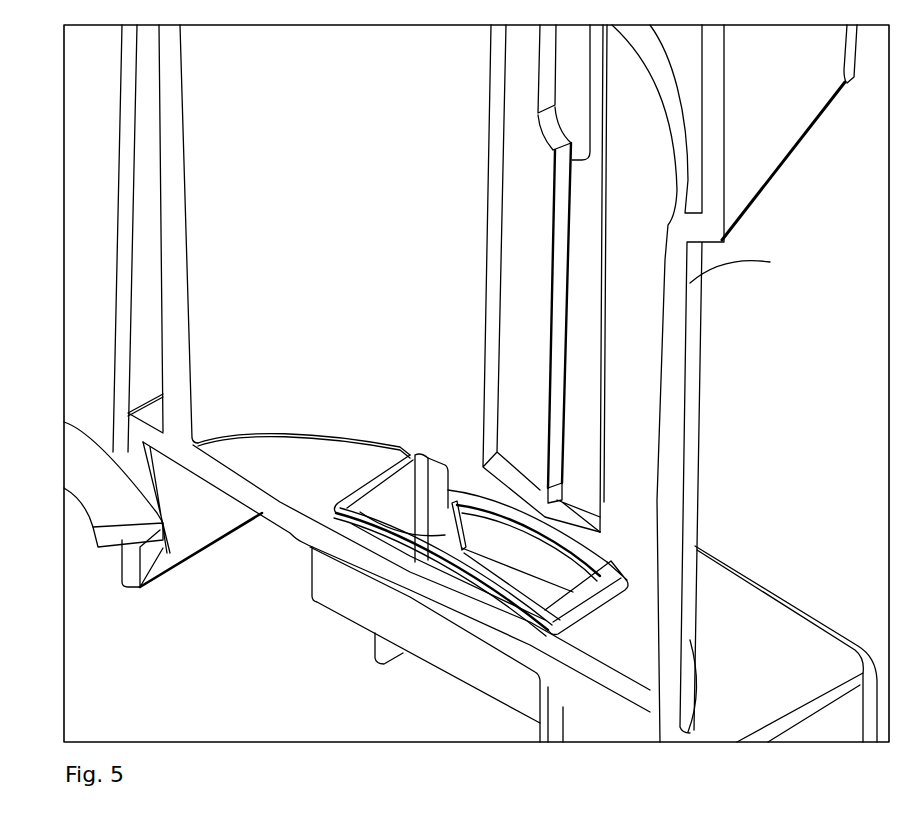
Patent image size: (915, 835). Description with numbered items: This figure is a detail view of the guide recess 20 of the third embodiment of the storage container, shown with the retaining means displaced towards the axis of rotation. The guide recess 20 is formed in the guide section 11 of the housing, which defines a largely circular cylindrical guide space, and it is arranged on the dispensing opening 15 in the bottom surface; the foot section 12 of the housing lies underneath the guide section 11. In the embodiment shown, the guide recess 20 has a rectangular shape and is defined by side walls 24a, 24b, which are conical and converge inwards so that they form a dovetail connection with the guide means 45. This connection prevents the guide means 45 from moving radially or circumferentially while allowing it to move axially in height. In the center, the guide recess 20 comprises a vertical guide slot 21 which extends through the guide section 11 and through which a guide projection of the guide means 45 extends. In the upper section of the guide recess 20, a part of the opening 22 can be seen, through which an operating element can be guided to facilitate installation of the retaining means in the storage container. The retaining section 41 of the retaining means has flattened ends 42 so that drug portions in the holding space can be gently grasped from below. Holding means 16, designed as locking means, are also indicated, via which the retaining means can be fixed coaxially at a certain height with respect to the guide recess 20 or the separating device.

The guide section 11 is at (678, 446).
The foot section 12 is at (843, 722).
The dispensing opening 15 is at (497, 578).
The holding means 16 is at (563, 282).
The guide recess 20 is at (525, 368).
The guide slot 21 is at (548, 430).
The opening 22 is at (573, 80).
The side wall 24a is at (497, 213).
The side wall 24b is at (607, 310).
The retaining section 41 is at (120, 498).
The flattened ends 42 is at (128, 530).
The guide means 45 is at (92, 103).